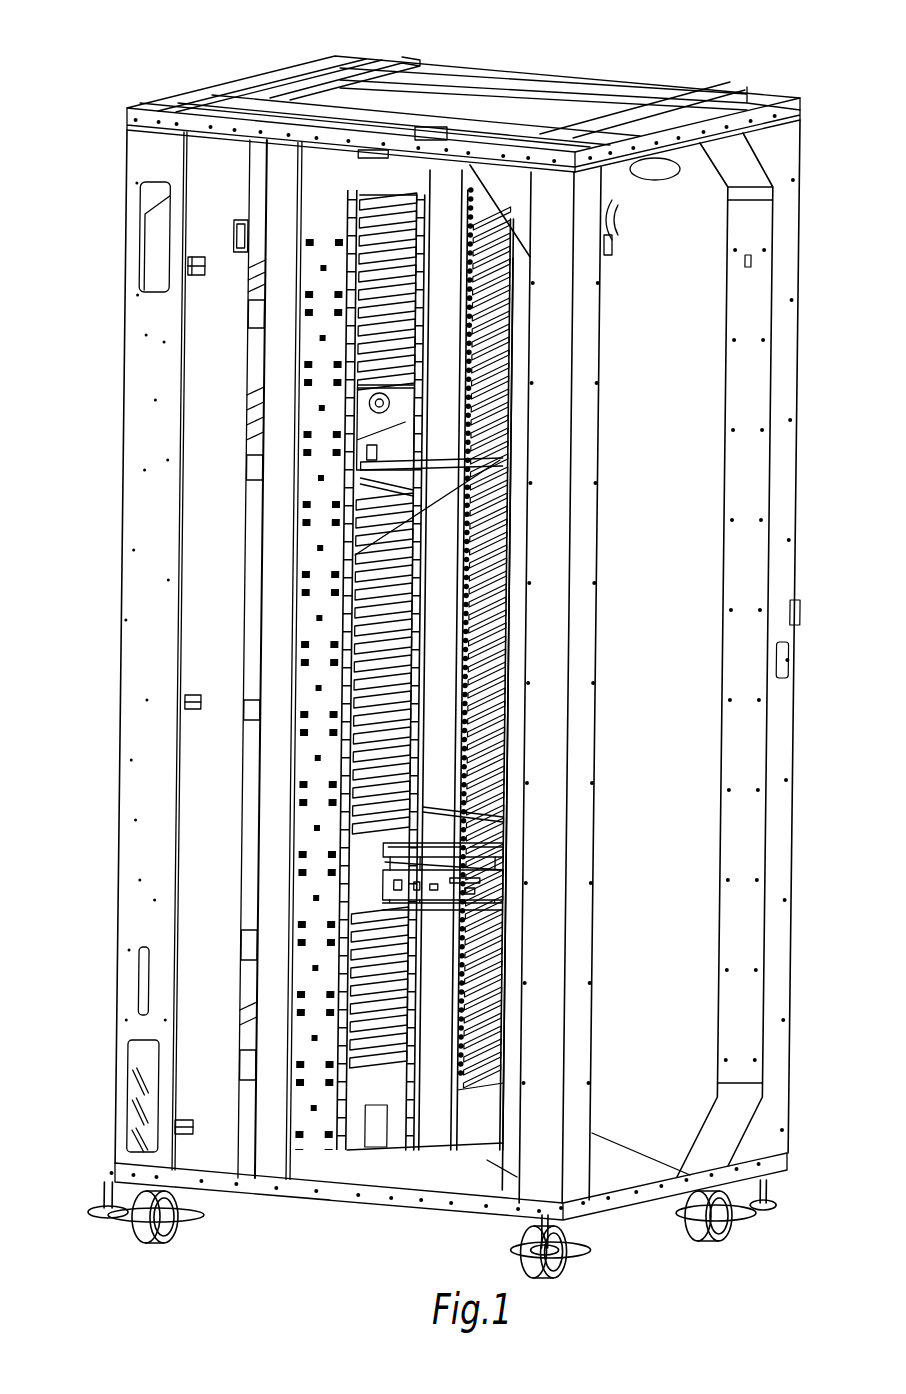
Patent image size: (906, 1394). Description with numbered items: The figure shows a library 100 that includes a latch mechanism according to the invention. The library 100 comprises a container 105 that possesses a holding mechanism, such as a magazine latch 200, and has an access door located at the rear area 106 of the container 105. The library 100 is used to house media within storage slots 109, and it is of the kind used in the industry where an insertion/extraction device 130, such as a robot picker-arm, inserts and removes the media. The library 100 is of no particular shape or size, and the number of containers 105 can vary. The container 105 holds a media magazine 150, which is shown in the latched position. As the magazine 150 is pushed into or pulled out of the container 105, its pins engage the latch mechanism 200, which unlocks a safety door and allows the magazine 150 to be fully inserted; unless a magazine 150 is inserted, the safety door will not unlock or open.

The library 100 is at (580, 42).
The container 105 is at (362, 557).
The rear area 106 is at (125, 527).
The storage slots 109 is at (372, 232).
The insertion/extraction device 130 is at (432, 897).
The media magazine 150 is at (362, 603).
The magazine latch 200 is at (248, 495).